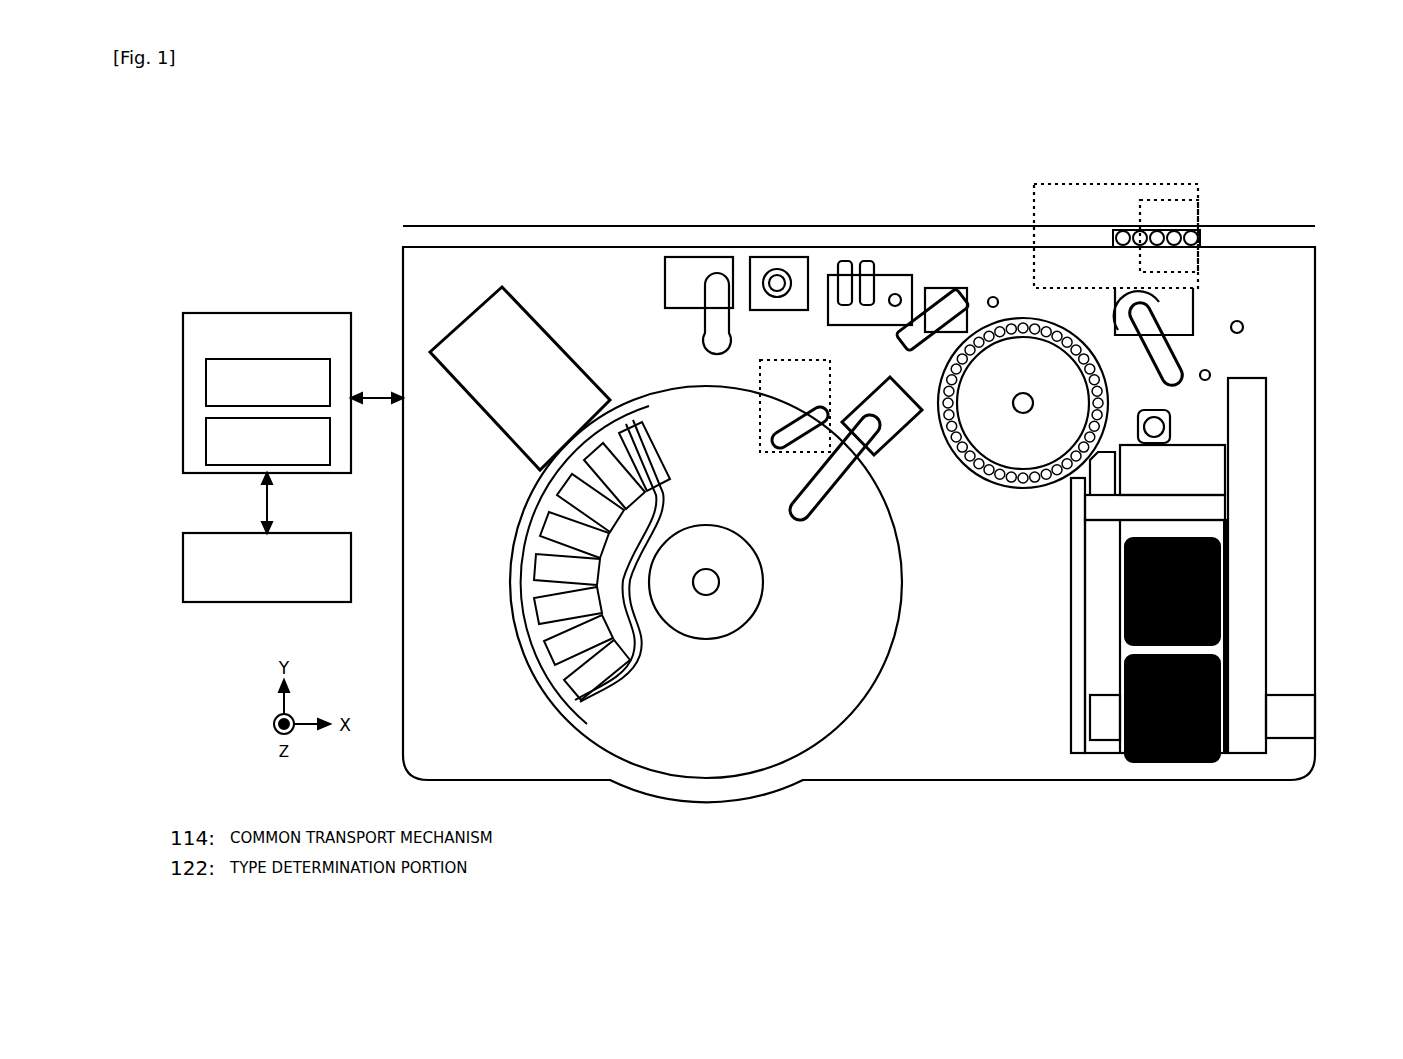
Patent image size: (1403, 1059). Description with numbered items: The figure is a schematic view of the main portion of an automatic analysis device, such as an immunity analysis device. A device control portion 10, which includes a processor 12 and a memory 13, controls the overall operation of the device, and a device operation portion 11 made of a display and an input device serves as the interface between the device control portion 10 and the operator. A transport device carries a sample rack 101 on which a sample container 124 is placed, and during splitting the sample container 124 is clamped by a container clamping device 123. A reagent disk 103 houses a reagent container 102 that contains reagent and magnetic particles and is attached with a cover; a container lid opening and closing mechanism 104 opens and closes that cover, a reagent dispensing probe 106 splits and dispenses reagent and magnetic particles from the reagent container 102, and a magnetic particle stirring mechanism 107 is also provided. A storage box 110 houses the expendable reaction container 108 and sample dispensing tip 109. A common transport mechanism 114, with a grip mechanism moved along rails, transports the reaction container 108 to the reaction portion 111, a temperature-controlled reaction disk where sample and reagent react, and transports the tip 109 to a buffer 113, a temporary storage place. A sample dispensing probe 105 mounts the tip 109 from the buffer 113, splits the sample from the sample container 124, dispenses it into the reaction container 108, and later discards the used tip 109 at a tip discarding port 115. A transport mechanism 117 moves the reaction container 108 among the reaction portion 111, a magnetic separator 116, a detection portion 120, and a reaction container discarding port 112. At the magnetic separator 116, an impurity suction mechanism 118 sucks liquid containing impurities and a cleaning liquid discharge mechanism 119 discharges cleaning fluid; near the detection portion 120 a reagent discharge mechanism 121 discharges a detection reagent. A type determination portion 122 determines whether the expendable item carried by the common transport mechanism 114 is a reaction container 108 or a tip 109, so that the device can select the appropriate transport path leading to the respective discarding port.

The device control portion 10 is at (202, 313).
The device operation portion 11 is at (200, 533).
The processor 12 is at (206, 385).
The memory 13 is at (206, 445).
The sample rack 101 is at (1147, 230).
The reagent container 102 is at (617, 403).
The reagent disk 103 is at (657, 395).
The container lid opening and closing mechanism 104 is at (462, 322).
The sample dispensing probe 105 is at (1192, 310).
The reagent dispensing probe 106 is at (900, 433).
The magnetic particle stirring mechanism 107 is at (797, 450).
The reaction container 108 is at (1142, 762).
The sample dispensing tip 109 is at (1190, 763).
The storage box 110 is at (1220, 763).
The reaction portion 111 is at (1013, 318).
The reaction container discarding port 112 is at (993, 297).
The buffer 113 is at (1209, 372).
The common transport mechanism 114 is at (1120, 473).
The tip discarding port 115 is at (1240, 323).
The magnetic separator 116 is at (898, 294).
The transport mechanism 117 is at (953, 288).
The impurity suction mechanism 118 is at (843, 261).
The cleaning liquid discharge mechanism 119 is at (865, 261).
The detection portion 120 is at (768, 257).
The reagent discharge mechanism 121 is at (697, 257).
The type determination portion 122 is at (1170, 423).
The container clamping device 123 is at (1090, 184).
The sample container 124 is at (1183, 247).